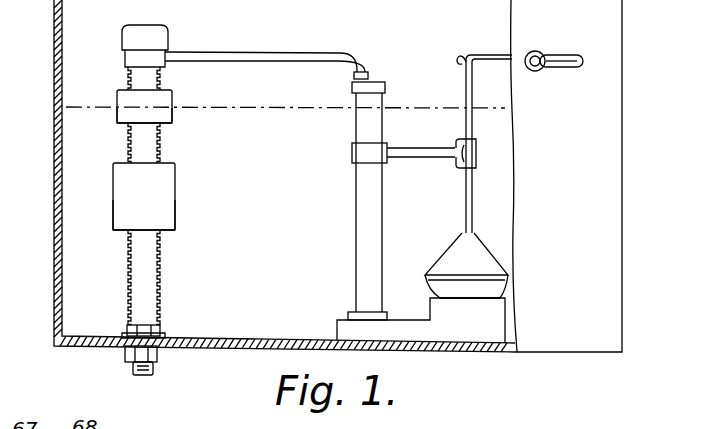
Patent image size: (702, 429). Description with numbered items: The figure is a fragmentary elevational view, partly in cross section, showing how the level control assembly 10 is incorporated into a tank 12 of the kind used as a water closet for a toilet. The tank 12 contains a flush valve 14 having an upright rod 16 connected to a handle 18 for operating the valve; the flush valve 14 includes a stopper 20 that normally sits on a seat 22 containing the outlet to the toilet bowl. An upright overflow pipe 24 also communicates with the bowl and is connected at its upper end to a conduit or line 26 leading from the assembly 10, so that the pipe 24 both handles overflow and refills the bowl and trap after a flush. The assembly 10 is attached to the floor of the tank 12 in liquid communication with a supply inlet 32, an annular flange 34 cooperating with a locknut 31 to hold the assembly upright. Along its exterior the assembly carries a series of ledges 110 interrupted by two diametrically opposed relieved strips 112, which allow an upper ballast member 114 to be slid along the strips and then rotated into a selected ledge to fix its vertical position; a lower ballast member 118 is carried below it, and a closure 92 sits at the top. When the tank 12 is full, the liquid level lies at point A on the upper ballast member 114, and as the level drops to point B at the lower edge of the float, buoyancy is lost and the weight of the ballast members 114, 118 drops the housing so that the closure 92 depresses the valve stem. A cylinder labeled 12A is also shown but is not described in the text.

The assembly 10 is at (149, 202).
The tank 12 is at (56, 79).
The cylinder 12A is at (385, 78).
The flush valve 14 is at (494, 243).
The upright rod 16 is at (467, 122).
The handle 18 is at (565, 56).
The stopper 20 is at (505, 287).
The seat 22 is at (505, 300).
The overflow pipe 24 is at (362, 252).
The conduit or line 26 is at (313, 54).
The locknut 31 is at (163, 352).
The supply inlet 32 is at (150, 375).
The annular flange 34 is at (160, 332).
The closure 92 is at (181, 16).
The ledges 110 is at (160, 140).
The relieved strips 112 is at (147, 255).
The upper ballast member 114 is at (115, 132).
The lower ballast member 118 is at (109, 217).
The point A is at (179, 118).
The point B is at (184, 219).